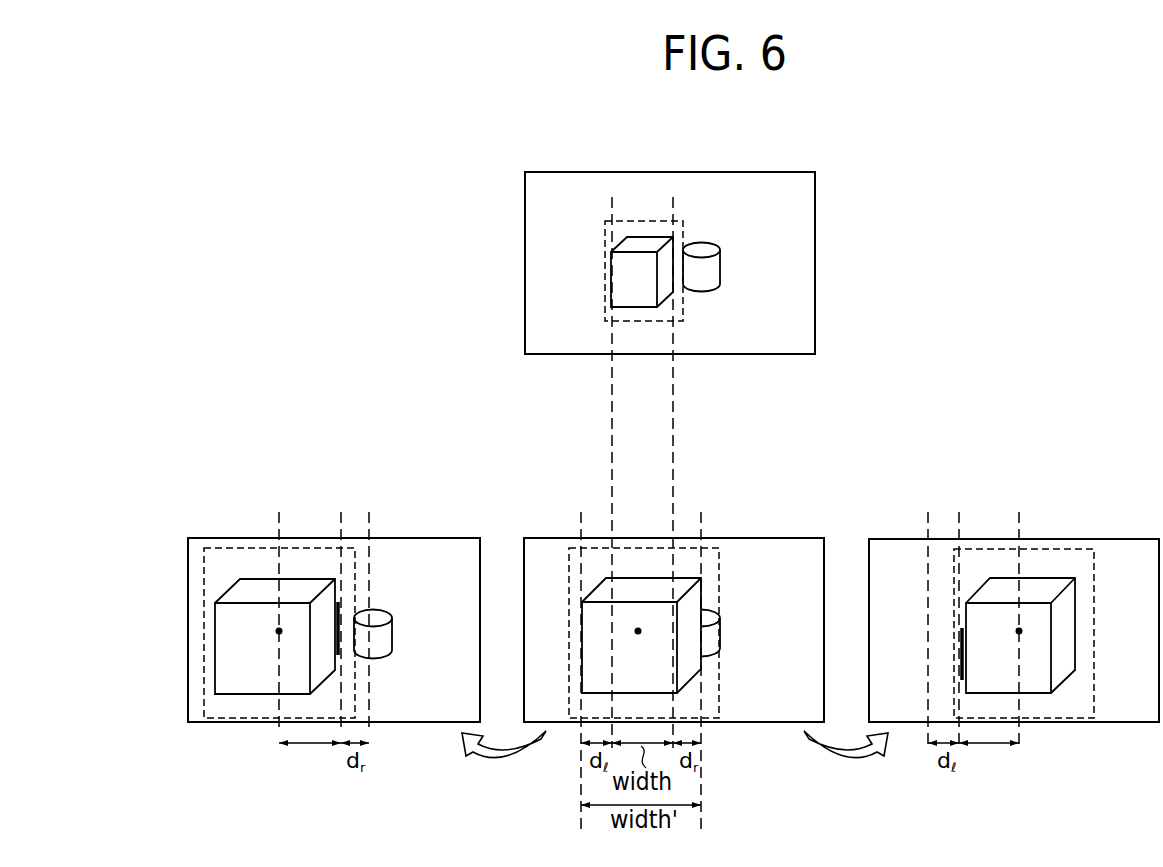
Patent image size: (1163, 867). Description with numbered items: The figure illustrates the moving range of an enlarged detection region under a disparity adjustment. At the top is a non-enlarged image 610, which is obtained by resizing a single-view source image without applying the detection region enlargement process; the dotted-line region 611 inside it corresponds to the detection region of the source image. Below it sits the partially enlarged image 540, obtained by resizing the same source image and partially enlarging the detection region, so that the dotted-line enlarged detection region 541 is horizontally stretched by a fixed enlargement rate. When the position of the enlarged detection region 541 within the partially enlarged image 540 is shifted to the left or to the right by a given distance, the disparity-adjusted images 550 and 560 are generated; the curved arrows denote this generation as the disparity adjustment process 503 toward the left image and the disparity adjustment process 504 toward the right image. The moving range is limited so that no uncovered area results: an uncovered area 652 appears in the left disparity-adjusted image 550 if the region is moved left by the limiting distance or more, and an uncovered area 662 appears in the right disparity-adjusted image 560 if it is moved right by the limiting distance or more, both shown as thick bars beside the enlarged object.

The non-enlarged image 610 is at (815, 310).
The region 611 is at (677, 211).
The partially enlarged image 540 is at (778, 538).
The enlarged detection region 541 is at (719, 566).
The disparity-adjusted image 550 is at (433, 538).
The disparity-adjusted image 560 is at (1115, 539).
The uncovered area 652 is at (340, 597).
The uncovered area 662 is at (958, 622).
The disparity adjustment process 503 is at (504, 761).
The disparity adjustment process 504 is at (846, 761).